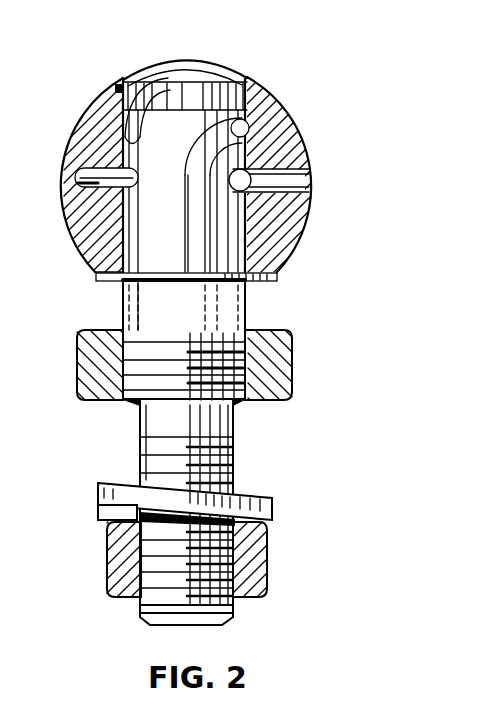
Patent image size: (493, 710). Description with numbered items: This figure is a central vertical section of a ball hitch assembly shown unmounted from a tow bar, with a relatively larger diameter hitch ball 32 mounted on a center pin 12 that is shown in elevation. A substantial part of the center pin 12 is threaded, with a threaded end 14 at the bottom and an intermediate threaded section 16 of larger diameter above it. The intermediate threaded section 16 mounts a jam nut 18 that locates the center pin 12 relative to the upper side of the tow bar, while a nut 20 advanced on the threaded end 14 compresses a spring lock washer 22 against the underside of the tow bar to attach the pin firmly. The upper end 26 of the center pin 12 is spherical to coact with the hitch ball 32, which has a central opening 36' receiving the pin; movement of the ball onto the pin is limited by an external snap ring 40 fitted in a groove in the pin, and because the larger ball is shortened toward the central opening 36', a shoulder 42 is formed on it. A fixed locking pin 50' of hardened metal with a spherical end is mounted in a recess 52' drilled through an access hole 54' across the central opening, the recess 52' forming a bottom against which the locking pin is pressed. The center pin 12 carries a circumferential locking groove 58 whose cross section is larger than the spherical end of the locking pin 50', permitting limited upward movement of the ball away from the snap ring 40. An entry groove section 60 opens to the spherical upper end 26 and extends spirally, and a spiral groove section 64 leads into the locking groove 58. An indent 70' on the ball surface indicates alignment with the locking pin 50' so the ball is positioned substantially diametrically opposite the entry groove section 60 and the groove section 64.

The center pin 12 is at (244, 415).
The threaded end 14 is at (232, 467).
The intermediate threaded section 16 is at (222, 342).
The jam nut 18 is at (277, 363).
The nut 20 is at (260, 555).
The spring lock washer 22 is at (273, 508).
The upper end 26 is at (230, 68).
The hitch ball 32 is at (297, 145).
The central opening 36' is at (290, 107).
The external snap ring 40 is at (262, 280).
The shoulder 42 is at (107, 280).
The fixed locking pin 50' is at (79, 149).
The recess 52' is at (54, 218).
The access hole 54' is at (307, 184).
The locking groove 58 is at (238, 208).
The entry groove section 60 is at (163, 80).
The groove section 64 is at (198, 84).
The indent 70' is at (97, 69).